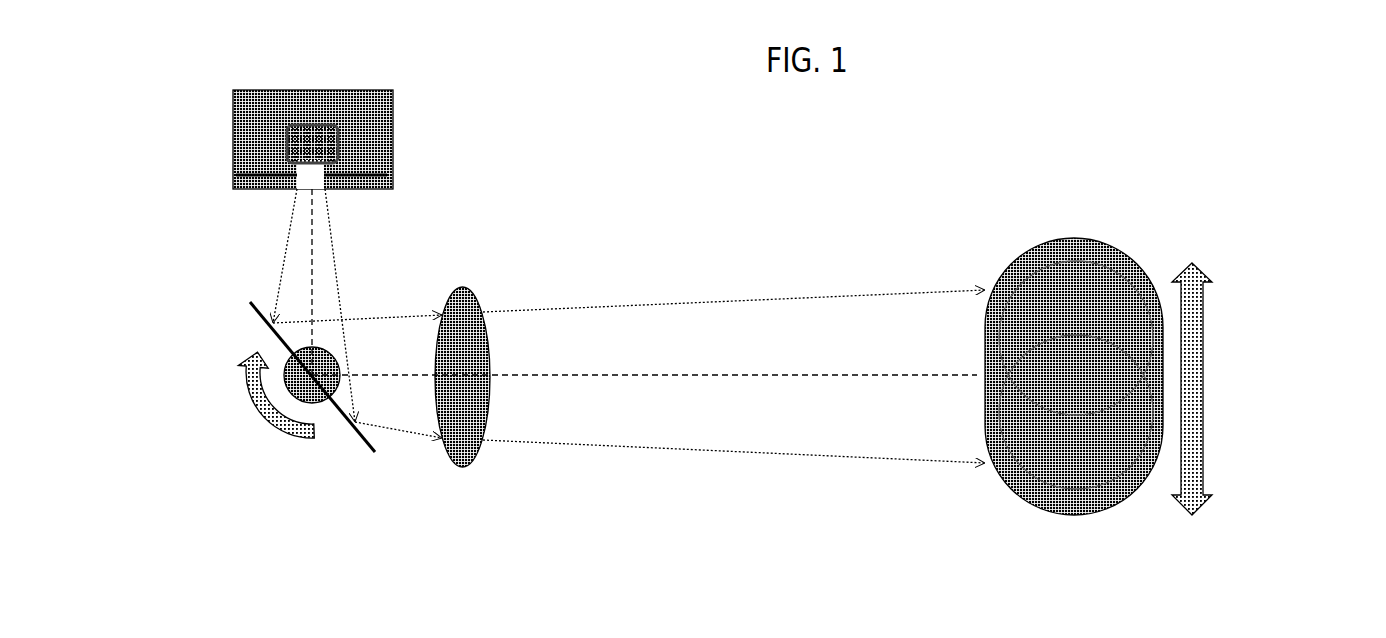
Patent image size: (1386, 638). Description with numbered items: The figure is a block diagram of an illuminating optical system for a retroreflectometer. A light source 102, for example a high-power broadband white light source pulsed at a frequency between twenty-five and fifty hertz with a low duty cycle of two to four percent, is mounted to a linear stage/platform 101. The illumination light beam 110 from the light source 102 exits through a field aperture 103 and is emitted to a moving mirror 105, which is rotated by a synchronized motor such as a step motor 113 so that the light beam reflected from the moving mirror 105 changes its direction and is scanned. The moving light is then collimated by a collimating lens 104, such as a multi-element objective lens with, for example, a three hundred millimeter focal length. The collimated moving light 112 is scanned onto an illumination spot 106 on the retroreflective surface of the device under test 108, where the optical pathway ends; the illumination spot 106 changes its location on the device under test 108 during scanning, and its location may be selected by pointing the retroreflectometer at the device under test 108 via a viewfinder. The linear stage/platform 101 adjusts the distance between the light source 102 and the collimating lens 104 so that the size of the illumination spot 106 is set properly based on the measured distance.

The linear stage/platform 101 is at (393, 103).
The light source 102 is at (338, 143).
The field aperture 103 is at (317, 189).
The collimating lens 104 is at (475, 285).
The moving mirror 105 is at (357, 447).
The illumination spot 106 is at (998, 488).
The device under test 108 is at (1213, 340).
The illumination light beam 110 is at (287, 240).
The collimated moving light 112 is at (652, 447).
The step motor 113 is at (242, 392).